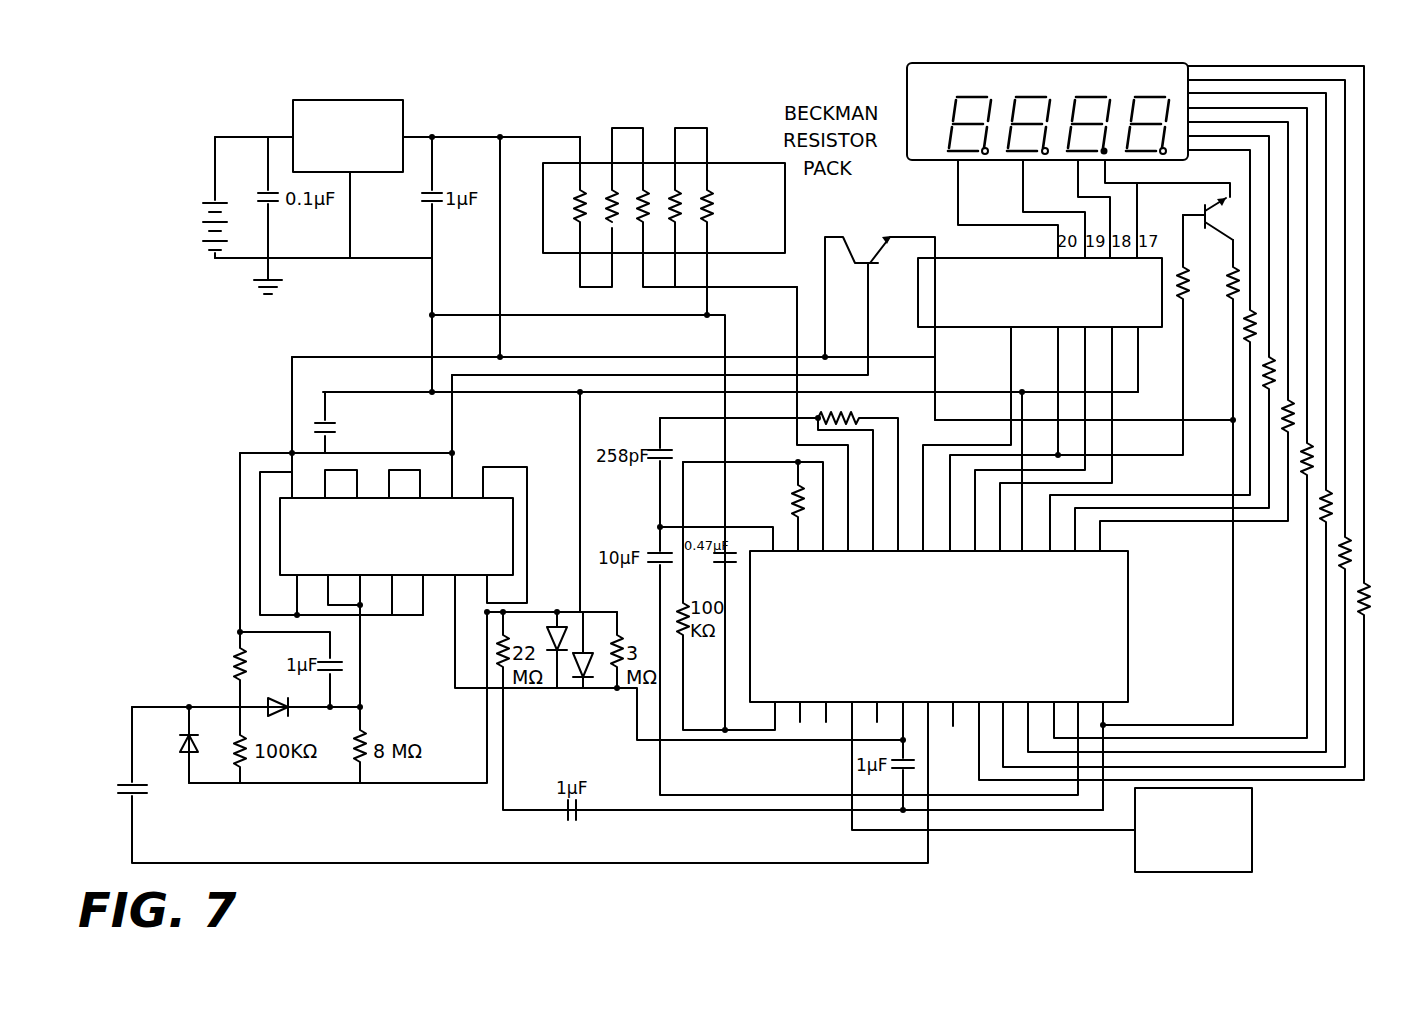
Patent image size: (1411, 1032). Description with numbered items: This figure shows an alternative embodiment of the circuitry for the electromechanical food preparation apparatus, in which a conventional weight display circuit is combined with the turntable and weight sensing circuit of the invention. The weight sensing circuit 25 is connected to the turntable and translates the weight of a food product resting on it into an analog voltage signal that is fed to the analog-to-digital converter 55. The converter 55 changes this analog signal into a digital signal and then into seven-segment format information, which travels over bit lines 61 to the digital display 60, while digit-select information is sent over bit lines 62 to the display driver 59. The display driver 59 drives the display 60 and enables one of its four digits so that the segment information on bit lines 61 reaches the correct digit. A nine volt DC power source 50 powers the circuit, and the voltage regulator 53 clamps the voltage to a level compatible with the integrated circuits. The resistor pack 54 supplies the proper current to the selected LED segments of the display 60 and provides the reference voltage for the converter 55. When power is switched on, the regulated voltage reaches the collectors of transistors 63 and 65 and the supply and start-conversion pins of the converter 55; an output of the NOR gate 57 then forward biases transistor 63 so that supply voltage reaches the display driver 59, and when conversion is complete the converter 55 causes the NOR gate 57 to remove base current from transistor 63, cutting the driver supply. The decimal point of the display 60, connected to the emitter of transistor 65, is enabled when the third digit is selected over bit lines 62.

The weight sensing circuit 25 is at (1252, 808).
The 9 volt DC power source 50 is at (212, 208).
The voltage regulator 53 is at (356, 103).
The resistor pack 54 is at (785, 232).
The analog-to-digital converter 55 is at (1128, 616).
The NOR gate 57 is at (513, 550).
The display driver 59 is at (967, 320).
The digital display 60 is at (917, 83).
The bit lines 61 is at (1250, 158).
The bit lines 62 is at (1138, 384).
The transistor 63 is at (866, 226).
The transistor 65 is at (1195, 209).